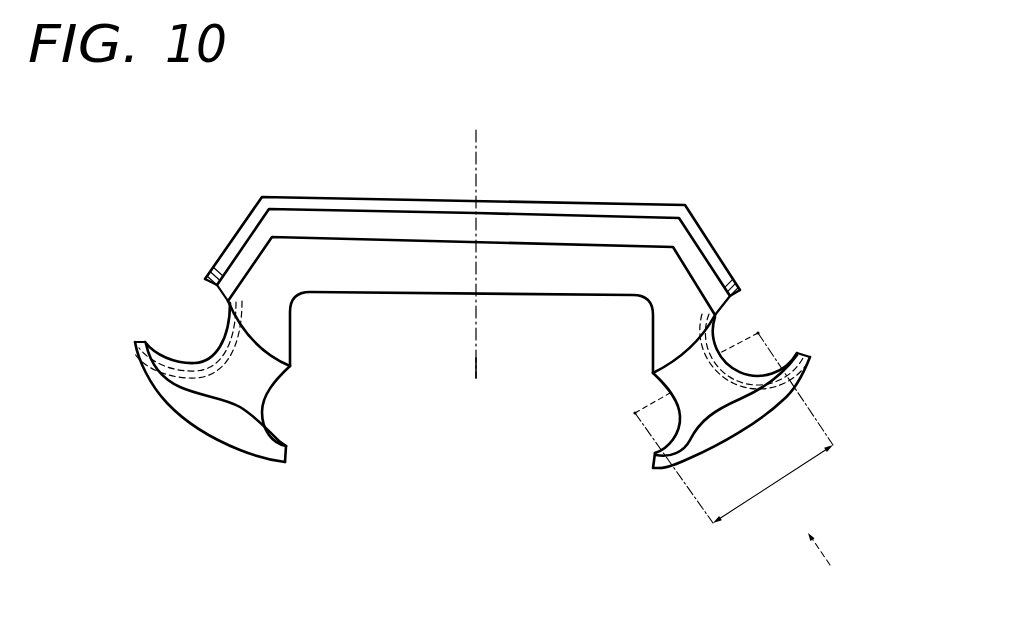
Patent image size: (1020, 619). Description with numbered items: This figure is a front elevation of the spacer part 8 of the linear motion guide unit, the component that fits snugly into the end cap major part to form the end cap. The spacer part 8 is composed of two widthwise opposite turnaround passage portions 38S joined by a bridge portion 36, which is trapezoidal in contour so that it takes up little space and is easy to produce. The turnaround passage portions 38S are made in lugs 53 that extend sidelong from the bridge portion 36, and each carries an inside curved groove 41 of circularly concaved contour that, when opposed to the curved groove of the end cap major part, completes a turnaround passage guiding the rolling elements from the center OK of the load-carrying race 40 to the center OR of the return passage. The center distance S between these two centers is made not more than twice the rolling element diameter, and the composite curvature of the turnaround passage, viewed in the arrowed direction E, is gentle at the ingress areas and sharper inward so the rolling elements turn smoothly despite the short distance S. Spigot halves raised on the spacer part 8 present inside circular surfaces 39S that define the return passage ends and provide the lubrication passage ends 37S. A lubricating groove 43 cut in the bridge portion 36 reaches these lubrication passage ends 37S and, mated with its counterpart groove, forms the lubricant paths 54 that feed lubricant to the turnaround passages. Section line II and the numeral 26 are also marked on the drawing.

The spacer part 8 is at (621, 195).
The reflector body 26 is at (355, 263).
The bridge portion 36 is at (527, 277).
The lubrication passage end 37S is at (215, 297).
The turnaround passage portion 38S is at (262, 351).
The inside circular surface 39S is at (176, 358).
The load-carrying race 40 is at (264, 408).
The inside curved groove 41 is at (240, 404).
The lubricating groove 43 is at (532, 228).
The lug 53 is at (247, 445).
The lubricant path 54 is at (650, 232).
The center of the return passage OR is at (758, 333).
The center of the load-carrying race OK is at (635, 413).
The center distance S is at (734, 428).
The arrowed direction E is at (827, 565).
The section line II- II is at (470, 145).